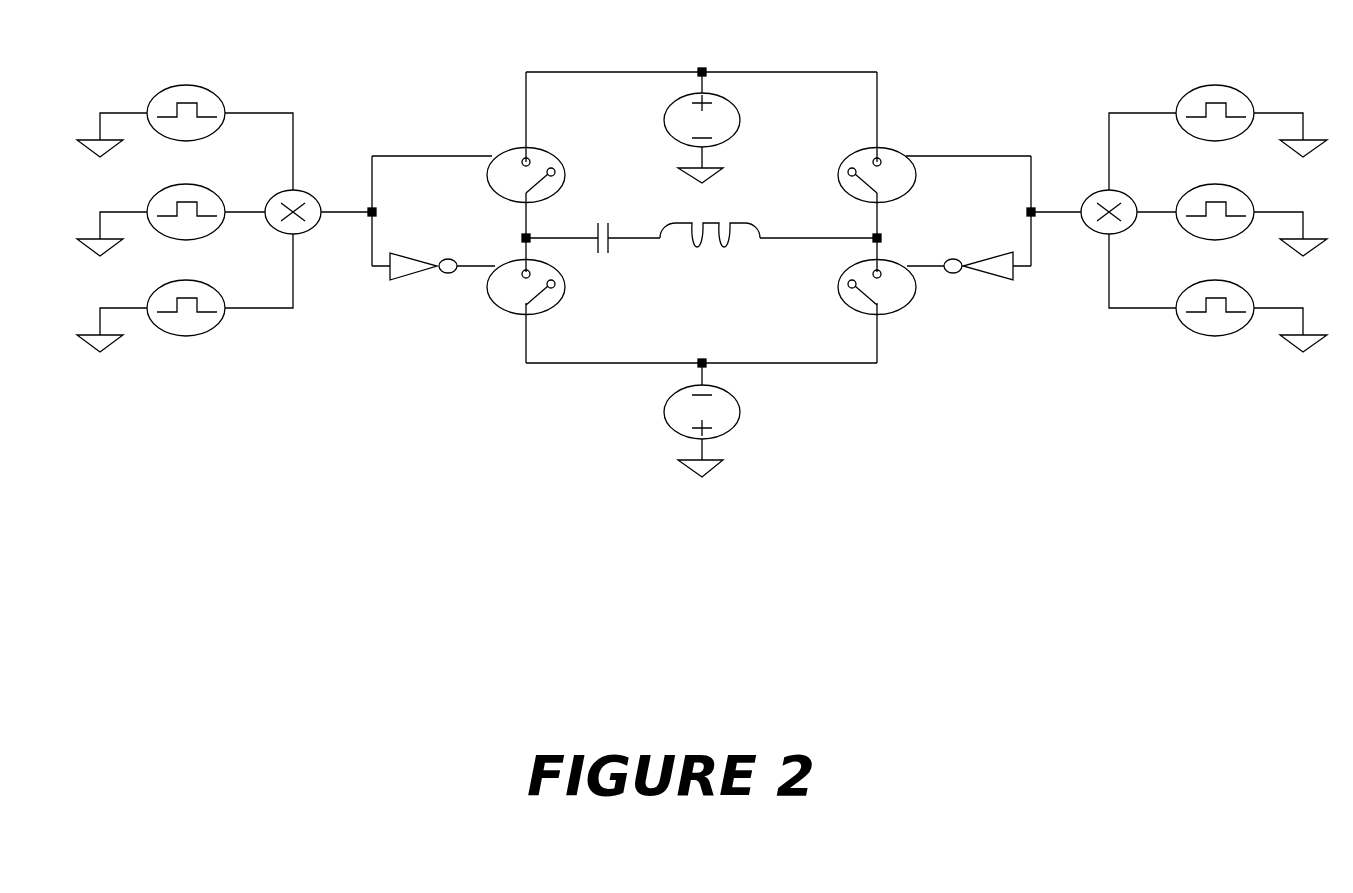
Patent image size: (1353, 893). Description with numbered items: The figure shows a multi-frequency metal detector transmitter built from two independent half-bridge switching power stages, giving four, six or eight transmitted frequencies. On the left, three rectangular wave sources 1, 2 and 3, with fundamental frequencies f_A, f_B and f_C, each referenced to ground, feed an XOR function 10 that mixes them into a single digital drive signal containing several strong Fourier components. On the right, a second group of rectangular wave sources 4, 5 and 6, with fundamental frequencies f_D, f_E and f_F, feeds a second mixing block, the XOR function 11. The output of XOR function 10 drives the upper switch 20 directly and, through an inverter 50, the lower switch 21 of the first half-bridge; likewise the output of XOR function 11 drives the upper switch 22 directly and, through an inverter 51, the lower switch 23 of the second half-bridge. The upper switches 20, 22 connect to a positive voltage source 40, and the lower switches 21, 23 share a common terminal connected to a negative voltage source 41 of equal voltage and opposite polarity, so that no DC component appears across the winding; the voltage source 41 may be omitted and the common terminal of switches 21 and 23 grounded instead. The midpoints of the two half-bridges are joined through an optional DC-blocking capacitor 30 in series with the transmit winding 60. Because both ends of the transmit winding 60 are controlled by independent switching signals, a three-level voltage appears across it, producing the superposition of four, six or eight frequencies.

The rectangular wave source 1 is at (186, 99).
The rectangular wave source 2 is at (186, 198).
The rectangular wave source 3 is at (186, 294).
The rectangular wave source 4 is at (1215, 99).
The rectangular wave source 5 is at (1215, 198).
The rectangular wave source 6 is at (1215, 294).
The XOR function 10 is at (301, 202).
The XOR function 11 is at (1102, 202).
The switch 20 is at (535, 185).
The switch 21 is at (535, 296).
The switch 22 is at (867, 185).
The switch 23 is at (867, 296).
The capacitor 30 is at (606, 251).
The voltage source 40 is at (717, 129).
The voltage source 41 is at (717, 422).
The inverter 50 is at (423, 255).
The inverter 51 is at (978, 255).
The transmit winding 60 is at (710, 224).